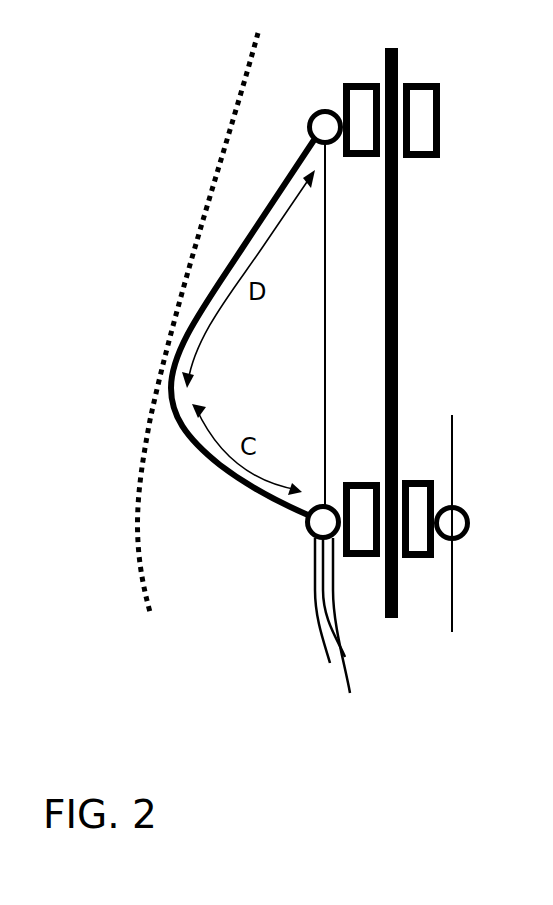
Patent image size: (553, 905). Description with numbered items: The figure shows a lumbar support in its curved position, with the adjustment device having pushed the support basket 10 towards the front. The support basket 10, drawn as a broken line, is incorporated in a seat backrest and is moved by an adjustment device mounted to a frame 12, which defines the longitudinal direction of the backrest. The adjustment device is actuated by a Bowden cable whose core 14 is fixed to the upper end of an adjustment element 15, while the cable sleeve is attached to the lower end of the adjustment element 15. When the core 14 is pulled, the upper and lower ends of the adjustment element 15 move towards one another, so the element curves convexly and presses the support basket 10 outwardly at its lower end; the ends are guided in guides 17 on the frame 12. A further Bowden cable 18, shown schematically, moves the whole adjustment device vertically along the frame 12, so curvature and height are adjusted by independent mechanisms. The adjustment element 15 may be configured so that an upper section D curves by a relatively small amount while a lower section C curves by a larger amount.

The support basket 10 is at (197, 250).
The frame 12 is at (397, 255).
The core 14 is at (327, 337).
The adjustment element 15 is at (277, 192).
The guides 17 is at (430, 104).
The Bowden cable 18 is at (452, 588).